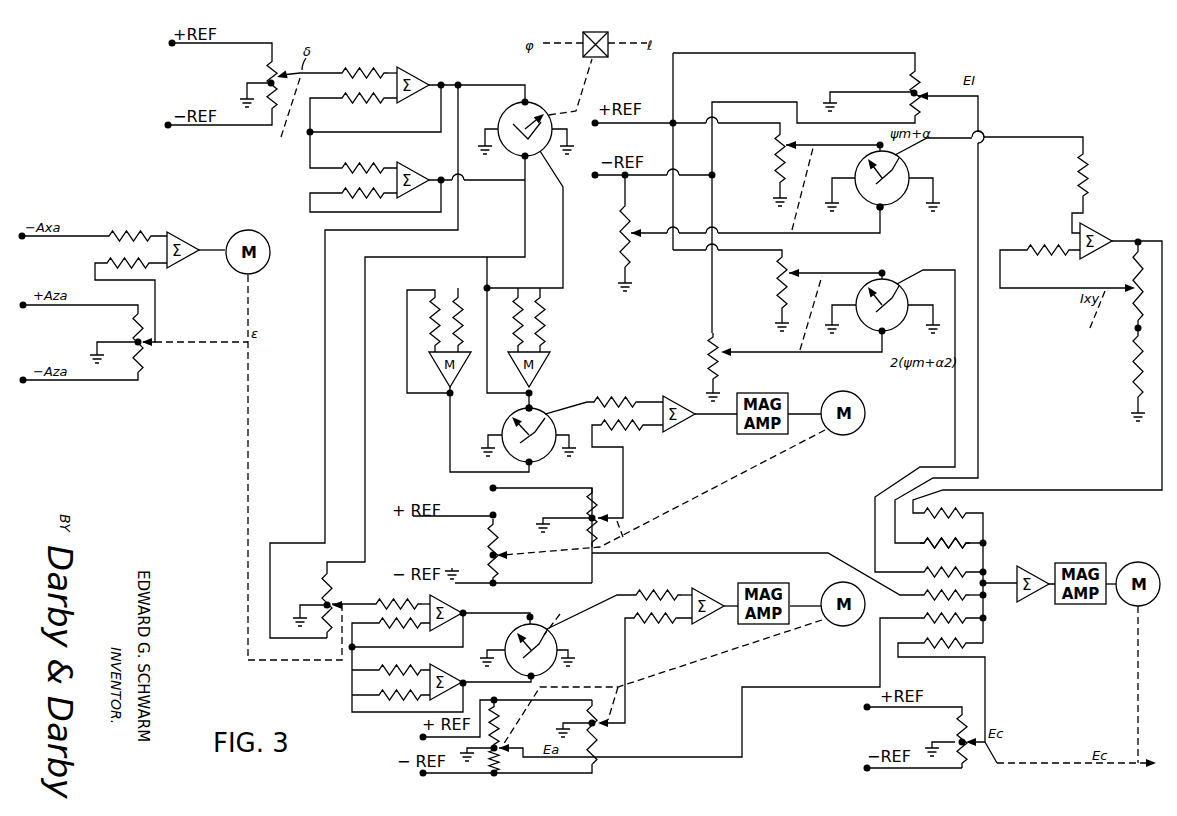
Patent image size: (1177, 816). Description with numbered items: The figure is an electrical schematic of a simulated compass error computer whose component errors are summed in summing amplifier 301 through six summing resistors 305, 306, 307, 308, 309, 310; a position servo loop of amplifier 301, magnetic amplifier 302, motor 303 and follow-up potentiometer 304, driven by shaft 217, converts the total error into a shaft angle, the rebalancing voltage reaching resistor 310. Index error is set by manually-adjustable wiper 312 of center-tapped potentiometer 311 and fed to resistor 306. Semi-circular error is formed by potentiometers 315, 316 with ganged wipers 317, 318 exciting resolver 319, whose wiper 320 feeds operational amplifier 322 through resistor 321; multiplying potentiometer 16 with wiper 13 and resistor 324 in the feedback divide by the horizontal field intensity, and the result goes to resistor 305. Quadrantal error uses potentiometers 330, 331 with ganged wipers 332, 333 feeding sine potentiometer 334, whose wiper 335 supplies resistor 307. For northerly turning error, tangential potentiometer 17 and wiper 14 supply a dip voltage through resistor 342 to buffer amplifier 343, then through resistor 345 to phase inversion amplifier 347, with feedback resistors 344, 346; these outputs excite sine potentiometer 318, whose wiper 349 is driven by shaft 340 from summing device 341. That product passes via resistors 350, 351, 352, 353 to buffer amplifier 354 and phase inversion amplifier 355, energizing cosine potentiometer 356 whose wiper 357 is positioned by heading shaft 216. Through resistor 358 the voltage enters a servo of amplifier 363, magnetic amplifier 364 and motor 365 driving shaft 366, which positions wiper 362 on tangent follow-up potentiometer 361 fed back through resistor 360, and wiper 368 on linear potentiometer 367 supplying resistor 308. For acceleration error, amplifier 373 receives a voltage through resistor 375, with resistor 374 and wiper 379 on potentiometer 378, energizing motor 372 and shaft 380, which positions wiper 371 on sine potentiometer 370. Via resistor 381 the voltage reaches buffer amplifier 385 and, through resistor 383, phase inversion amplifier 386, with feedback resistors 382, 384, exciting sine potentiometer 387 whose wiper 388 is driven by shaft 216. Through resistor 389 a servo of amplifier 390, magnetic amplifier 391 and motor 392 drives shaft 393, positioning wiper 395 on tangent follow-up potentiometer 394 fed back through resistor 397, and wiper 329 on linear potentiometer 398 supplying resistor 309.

The wiper 13 is at (1084, 287).
The adjustable wiper 14 is at (307, 70).
The multiplying potentiometer 16 is at (1124, 325).
The tangential potentiometer 17 is at (222, 84).
The shaft 216 is at (502, 432).
The shaft 217 is at (1136, 688).
The summing amplifier 301 is at (1044, 602).
The magnetic amplifier 302 is at (1108, 614).
The motor 303 is at (1156, 559).
The follow-up potentiometer 304 is at (956, 733).
The summing resistor 305 is at (938, 504).
The summing resistor 306 is at (934, 536).
The summing resistor 307 is at (936, 563).
The summing resistor 308 is at (939, 588).
The summing resistor 309 is at (939, 611).
The summing resistor 310 is at (939, 636).
The center-tapped potentiometer 311 is at (900, 98).
The manually-adjustable wiper 312 is at (930, 84).
The potentiometer 315 is at (624, 230).
The potentiometer 316 is at (768, 178).
The manually adjustable wiper 317 is at (755, 224).
The manually adjustable wiper 318 is at (536, 103).
The sine function resolver 319 is at (888, 200).
The wiper 320 is at (954, 171).
The resistor 321 is at (1076, 190).
The operational amplifier 322 is at (1097, 226).
The resistor 324 is at (1051, 243).
The wiper 329 is at (512, 741).
The potentiometer 330 is at (779, 297).
The potentiometer 331 is at (698, 370).
The adjustable wiper 332 is at (796, 262).
The adjustable wiper 333 is at (746, 358).
The sine function potentiometer 334 is at (902, 296).
The wiper 335 is at (853, 421).
The shaft 340 is at (588, 84).
The summing device 341 is at (570, 23).
The resistor 342 is at (340, 70).
The buffer amplifier 343 is at (420, 80).
The feedback resistor 344 is at (342, 100).
The resistor 345 is at (344, 156).
The feedback resistor 346 is at (344, 197).
The phase inversion amplifier 347 is at (432, 172).
The wiper 349 is at (502, 117).
The resistor 350 is at (541, 327).
The resistor 351 is at (536, 293).
The resistor 352 is at (450, 302).
The resistor 353 is at (430, 300).
The buffer amplifier 354 is at (526, 378).
The phase inversion amplifier 355 is at (448, 378).
The cosine potentiometer 356 is at (532, 408).
The wiper 357 is at (528, 429).
The resistor 358 is at (638, 400).
The resistor 360 is at (600, 432).
The follow-up tangent function potentiometer 361 is at (505, 534).
The wiper 362 is at (628, 519).
The amplifier 363 is at (674, 426).
The magnetic amplifier 364 is at (746, 385).
The motor 365 is at (870, 430).
The shaft 366 is at (711, 512).
The linear center-tapped potentiometer 367 is at (486, 548).
The wiper 368 is at (510, 548).
The sine function potentiometer 370 is at (308, 603).
The wiper 371 is at (336, 602).
The motor 372 is at (270, 268).
The amplifier 373 is at (200, 262).
The resistor 374 is at (144, 268).
The resistor 375 is at (142, 232).
The center-tap potentiometer 378 is at (144, 364).
The wiper 379 is at (144, 342).
The shaft 380 is at (284, 402).
The resistor 381 is at (381, 594).
The feedback resistor 382 is at (424, 634).
The resistor 383 is at (381, 660).
The feedback resistor 384 is at (379, 699).
The buffer amplifier 385 is at (482, 610).
The phase inversion amplifier 386 is at (443, 664).
The sine function potentiometer 387 is at (544, 664).
The wiper 388 is at (556, 637).
The resistor 389 is at (674, 592).
The amplifier 390 is at (726, 594).
The magnetic amplifier 391 is at (777, 580).
The motor 392 is at (846, 580).
The shaft 393 is at (763, 646).
The follow-up tangent function potentiometer 394 is at (510, 735).
The wiper 395 is at (603, 726).
The resistor 397 is at (638, 624).
The linear center-tapped potentiometer 398 is at (507, 763).